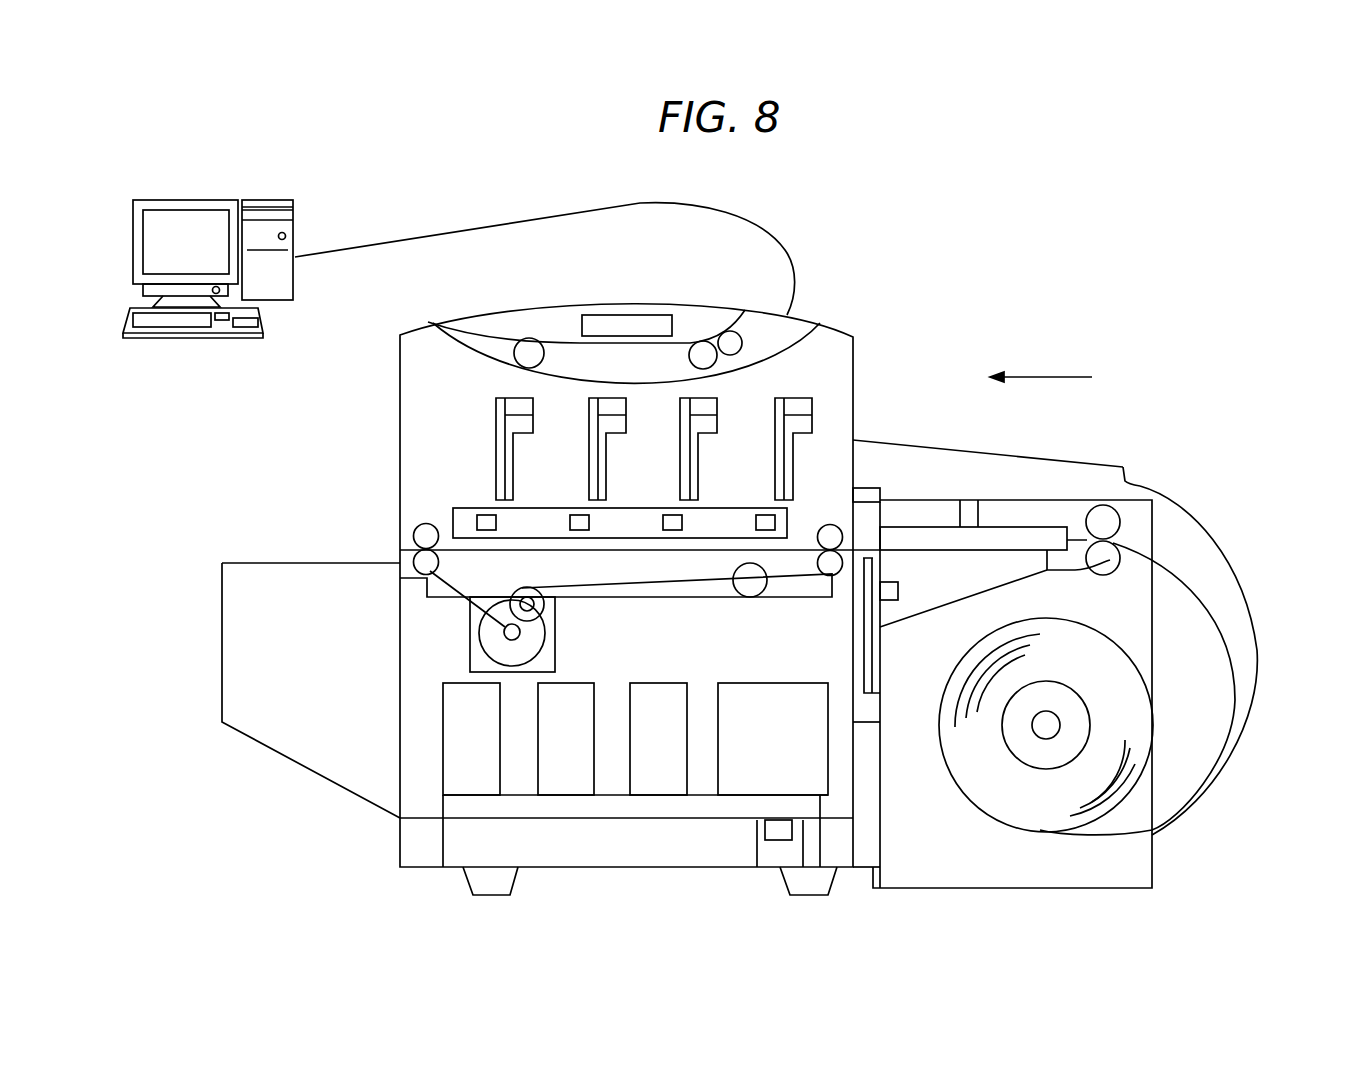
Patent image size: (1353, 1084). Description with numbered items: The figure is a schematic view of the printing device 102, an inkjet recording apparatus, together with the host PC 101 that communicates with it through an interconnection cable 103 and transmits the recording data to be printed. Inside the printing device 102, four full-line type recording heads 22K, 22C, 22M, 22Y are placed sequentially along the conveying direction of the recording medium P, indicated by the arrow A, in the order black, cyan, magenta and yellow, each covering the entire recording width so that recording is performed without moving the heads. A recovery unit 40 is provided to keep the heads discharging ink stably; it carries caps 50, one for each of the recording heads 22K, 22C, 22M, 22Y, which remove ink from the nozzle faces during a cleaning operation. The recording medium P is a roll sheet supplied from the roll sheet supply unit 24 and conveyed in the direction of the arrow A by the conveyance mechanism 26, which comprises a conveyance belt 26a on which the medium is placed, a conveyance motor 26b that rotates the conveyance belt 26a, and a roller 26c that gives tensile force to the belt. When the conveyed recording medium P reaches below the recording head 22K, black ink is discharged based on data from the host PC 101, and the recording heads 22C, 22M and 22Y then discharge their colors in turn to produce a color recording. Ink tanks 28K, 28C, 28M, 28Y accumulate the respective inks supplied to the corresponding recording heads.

The host PC 101 is at (308, 220).
The printing device 102 is at (982, 262).
The interconnection cable 103 is at (639, 203).
The recording head for yellow ink 22Y is at (497, 427).
The recording head for magenta ink 22M is at (589, 427).
The recording head for cyan ink 22C is at (681, 427).
The recording head for black ink 22K is at (775, 427).
The recovery unit 40 is at (452, 516).
The caps 50 is at (480, 515).
The conveyance mechanism 26 is at (398, 635).
The conveyance belt 26a is at (455, 597).
The conveyance motor 26b is at (480, 650).
The roller 26c is at (413, 553).
The ink tank for yellow ink 28Y is at (463, 797).
The ink tank for magenta ink 28M is at (570, 797).
The ink tank for cyan ink 28C is at (660, 797).
The ink tank for black ink 28K is at (742, 797).
The roll sheet supply unit 24 is at (1245, 530).
The recording medium P is at (1175, 568).
The arrow indicating conveying direction A is at (1046, 376).